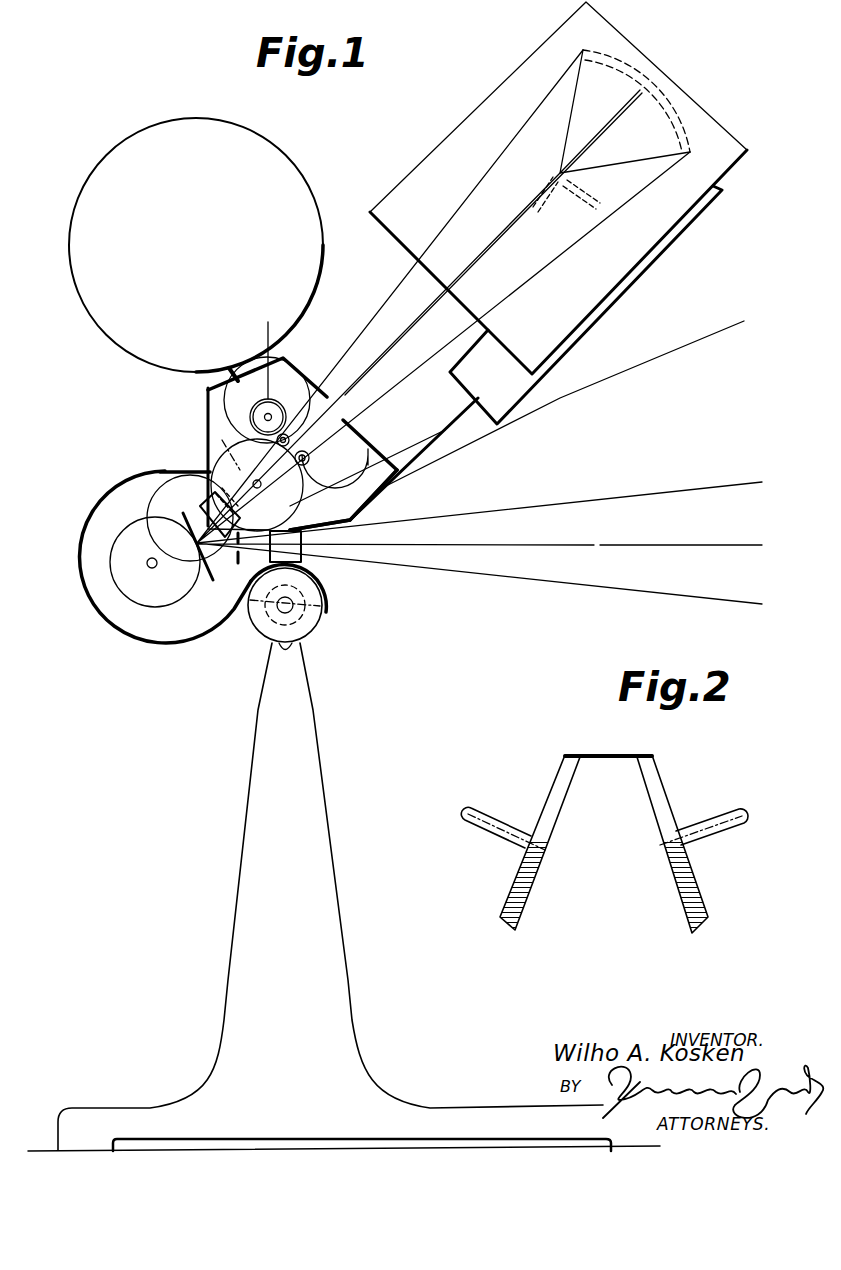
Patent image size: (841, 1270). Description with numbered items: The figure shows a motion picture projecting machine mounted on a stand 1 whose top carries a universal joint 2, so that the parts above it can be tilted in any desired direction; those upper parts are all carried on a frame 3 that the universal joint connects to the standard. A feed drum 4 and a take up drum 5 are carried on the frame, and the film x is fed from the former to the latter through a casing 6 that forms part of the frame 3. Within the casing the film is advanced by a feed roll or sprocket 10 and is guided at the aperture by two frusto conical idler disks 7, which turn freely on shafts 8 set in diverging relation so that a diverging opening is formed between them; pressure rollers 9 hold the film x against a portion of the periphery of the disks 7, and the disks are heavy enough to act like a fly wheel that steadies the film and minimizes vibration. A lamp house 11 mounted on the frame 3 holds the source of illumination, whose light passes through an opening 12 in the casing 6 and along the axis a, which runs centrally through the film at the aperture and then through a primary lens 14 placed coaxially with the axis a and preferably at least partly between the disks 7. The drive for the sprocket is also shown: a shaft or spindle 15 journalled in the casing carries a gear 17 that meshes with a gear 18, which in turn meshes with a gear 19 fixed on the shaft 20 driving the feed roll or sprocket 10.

In FIG. 1, the stand 1 is at (300, 797).
In FIG. 1, the universal joint 2 is at (288, 608).
In FIG. 1, the frame 3 is at (397, 492).
In FIG. 1, the feed drum 4 is at (518, 407).
In FIG. 1, the take up drum 5 is at (243, 143).
In FIG. 1, the casing 6 is at (305, 378).
In FIG. 1, the idler disks 7 is at (292, 507).
In FIG. 2, the idler disks 7 is at (527, 852).
In FIG. 2, the shafts 8 is at (494, 822).
In FIG. 1, the pressure rollers 9 is at (326, 449).
In FIG. 1, the feed roll or sprocket 10 is at (258, 350).
In FIG. 1, the lamp house 11 is at (706, 118).
In FIG. 1, the opening 12 is at (328, 396).
In FIG. 1, the primary lens 14 is at (255, 481).
In FIG. 1, the shaft or spindle 15 is at (153, 569).
In FIG. 1, the gear 17 is at (160, 532).
In FIG. 1, the gear 18 is at (180, 478).
In FIG. 1, the gear 19 is at (222, 407).
In FIG. 1, the shaft 20 is at (269, 414).
In FIG. 1, the axis a is at (467, 273).
In FIG. 1, the film x is at (373, 499).
In FIG. 2, the film x is at (597, 733).